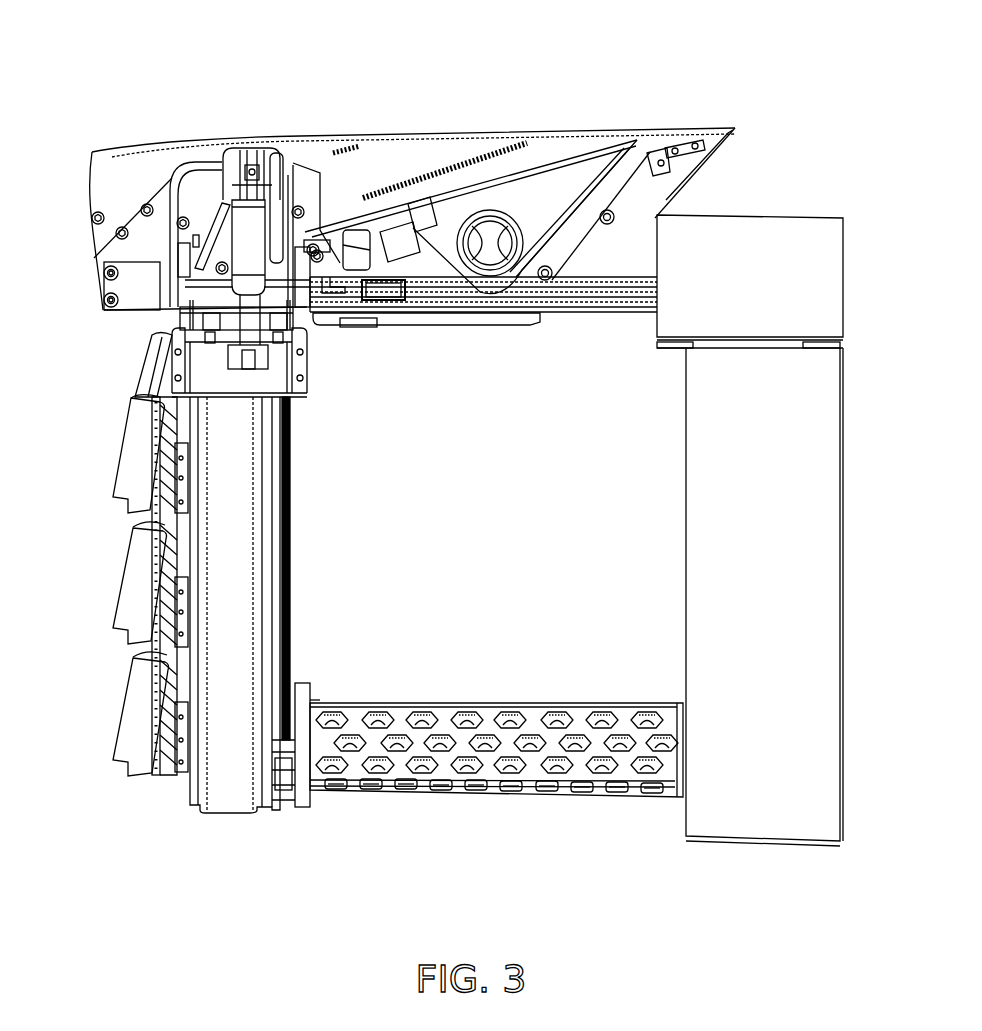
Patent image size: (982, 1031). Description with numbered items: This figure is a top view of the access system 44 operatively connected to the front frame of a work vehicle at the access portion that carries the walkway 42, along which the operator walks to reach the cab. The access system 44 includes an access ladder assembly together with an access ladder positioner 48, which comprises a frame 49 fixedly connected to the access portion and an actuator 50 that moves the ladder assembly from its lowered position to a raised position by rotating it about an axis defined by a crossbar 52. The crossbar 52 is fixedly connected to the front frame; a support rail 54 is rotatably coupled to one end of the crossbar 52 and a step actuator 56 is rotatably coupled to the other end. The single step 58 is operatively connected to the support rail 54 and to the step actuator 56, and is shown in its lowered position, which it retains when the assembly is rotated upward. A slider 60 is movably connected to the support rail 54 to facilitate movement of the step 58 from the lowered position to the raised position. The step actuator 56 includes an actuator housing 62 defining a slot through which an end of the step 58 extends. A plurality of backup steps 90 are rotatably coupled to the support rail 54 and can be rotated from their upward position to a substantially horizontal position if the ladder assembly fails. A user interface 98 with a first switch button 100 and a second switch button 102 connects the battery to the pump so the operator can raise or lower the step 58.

The walkway 42 is at (410, 162).
The access system 44 is at (130, 833).
The access ladder positioner 48 is at (237, 116).
The frame 49 is at (210, 208).
The actuator 50 is at (254, 276).
The crossbar 52 is at (583, 314).
The support rail 54 is at (234, 832).
The step actuator 56 is at (858, 792).
The step 58 is at (490, 716).
The slider 60 is at (303, 684).
The actuator housing 62 is at (820, 556).
The backup steps 90 is at (120, 452).
The user interface 98 is at (104, 285).
The first switch button 100 is at (110, 308).
The second switch button 102 is at (104, 272).